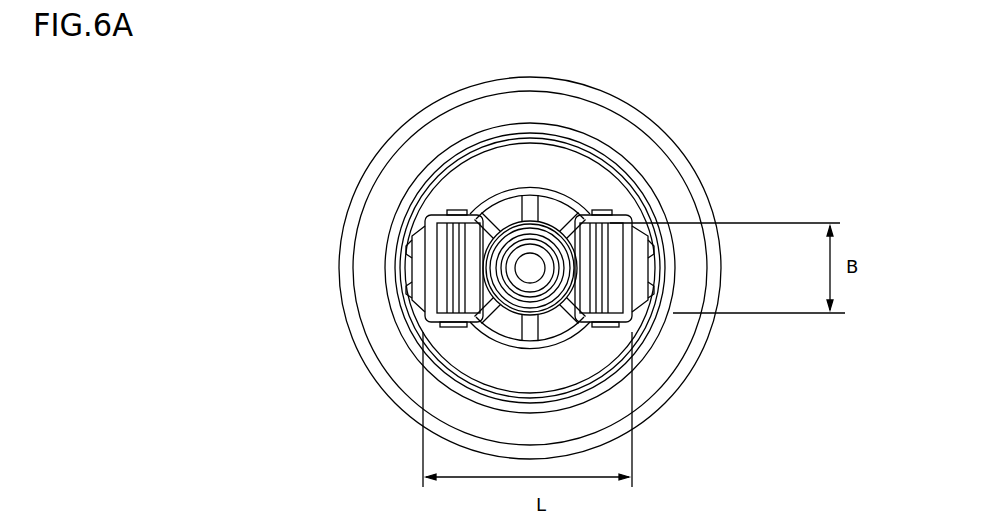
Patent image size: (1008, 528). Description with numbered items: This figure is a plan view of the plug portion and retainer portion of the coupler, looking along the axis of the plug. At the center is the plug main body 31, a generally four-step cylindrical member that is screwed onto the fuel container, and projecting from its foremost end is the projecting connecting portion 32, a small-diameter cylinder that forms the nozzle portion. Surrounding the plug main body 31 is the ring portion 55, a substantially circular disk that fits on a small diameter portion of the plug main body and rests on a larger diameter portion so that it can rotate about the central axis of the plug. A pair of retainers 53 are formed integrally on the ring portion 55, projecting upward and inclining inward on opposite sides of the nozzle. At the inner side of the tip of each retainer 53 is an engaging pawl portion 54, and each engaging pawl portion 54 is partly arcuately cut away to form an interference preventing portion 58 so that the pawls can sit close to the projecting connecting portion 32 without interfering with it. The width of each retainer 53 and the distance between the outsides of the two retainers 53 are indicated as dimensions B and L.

The plug main body 31 is at (678, 382).
The projecting connecting portion 32 is at (555, 227).
The retainer 53 is at (432, 253).
The engaging pawl portion 54 is at (487, 272).
The ring portion 55 is at (417, 142).
The interference preventing portion 58 is at (485, 262).